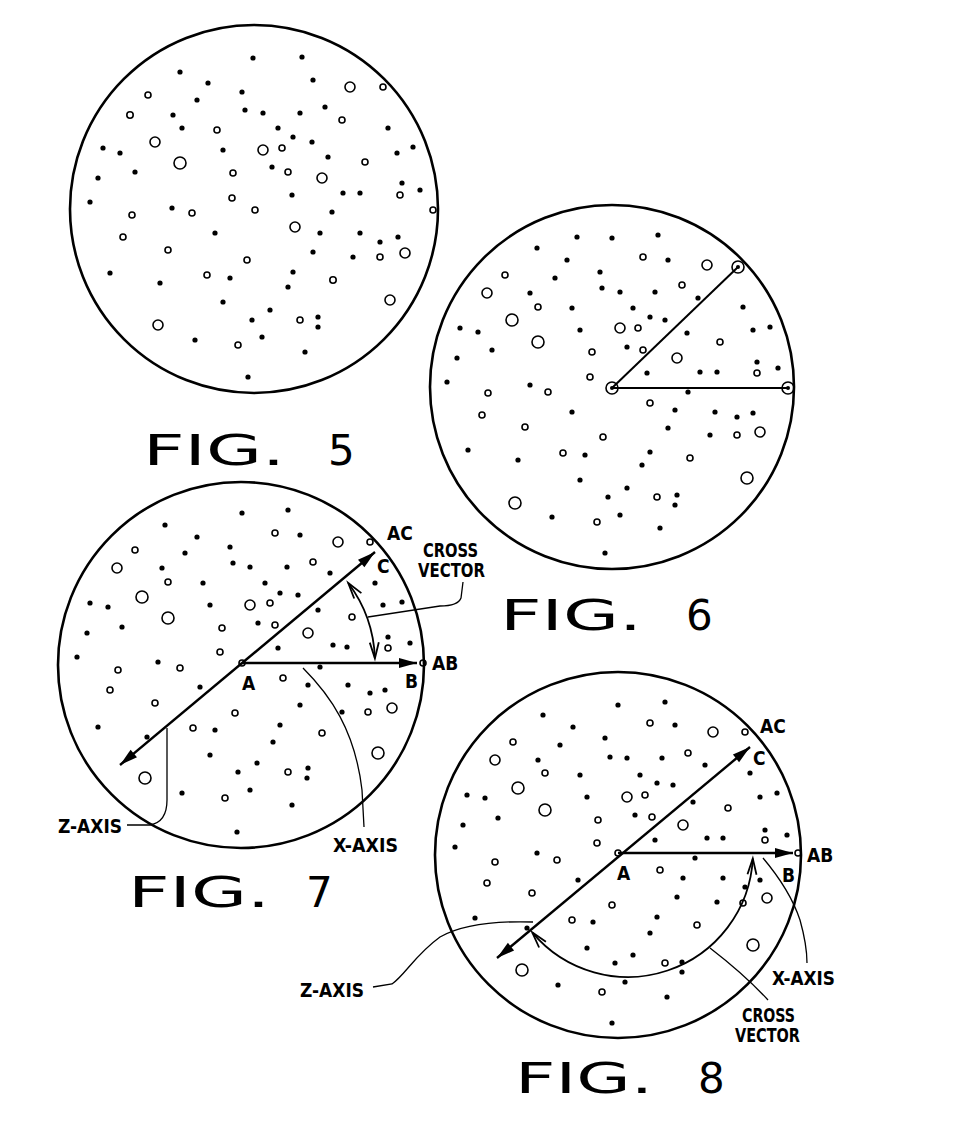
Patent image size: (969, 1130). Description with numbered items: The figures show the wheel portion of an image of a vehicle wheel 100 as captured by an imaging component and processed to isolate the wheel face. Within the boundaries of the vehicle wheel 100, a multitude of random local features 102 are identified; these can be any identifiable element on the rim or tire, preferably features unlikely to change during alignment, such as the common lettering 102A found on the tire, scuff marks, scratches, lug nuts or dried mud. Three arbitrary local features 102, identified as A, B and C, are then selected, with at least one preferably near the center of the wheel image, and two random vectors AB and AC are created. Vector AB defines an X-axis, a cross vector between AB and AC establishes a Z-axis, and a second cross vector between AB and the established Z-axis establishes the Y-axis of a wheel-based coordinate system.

In FIG. 5, the vehicle wheel 100 is at (72, 148).
In FIG. 6, the vehicle wheel 100 is at (534, 217).
In FIG. 7, the vehicle wheel 100 is at (324, 499).
In FIG. 8, the vehicle wheel 100 is at (729, 710).
In FIG. 5, the random local features 102 is at (128, 111).
In FIG. 6, the random local features 102 is at (742, 262).
In FIG. 5, the common lettering 102A is at (317, 43).
In FIG. 6, the common lettering 102A is at (672, 223).
In FIG. 7, the common lettering 102A is at (243, 500).
In FIG. 8, the common lettering 102A is at (618, 693).